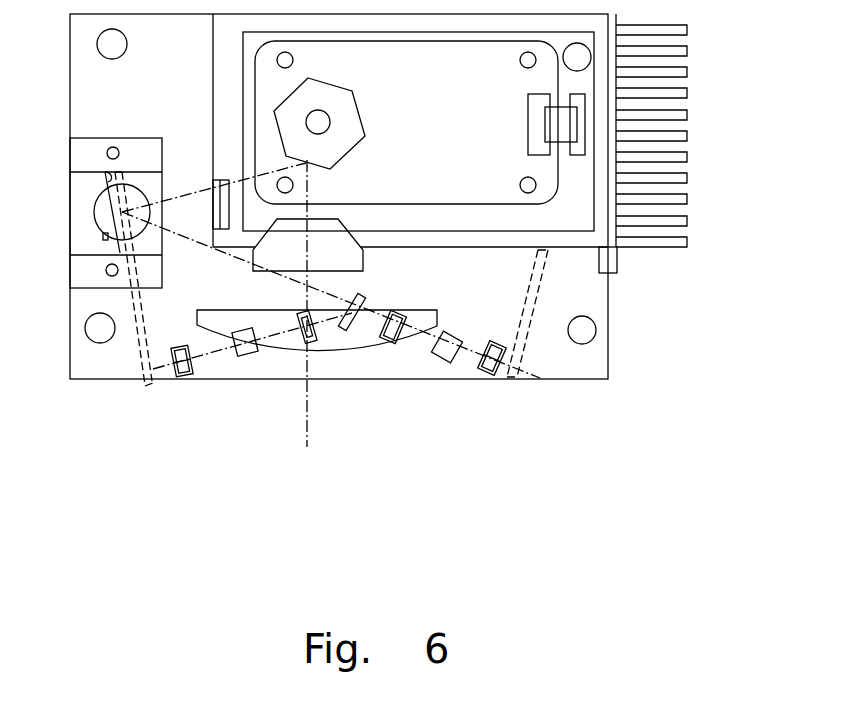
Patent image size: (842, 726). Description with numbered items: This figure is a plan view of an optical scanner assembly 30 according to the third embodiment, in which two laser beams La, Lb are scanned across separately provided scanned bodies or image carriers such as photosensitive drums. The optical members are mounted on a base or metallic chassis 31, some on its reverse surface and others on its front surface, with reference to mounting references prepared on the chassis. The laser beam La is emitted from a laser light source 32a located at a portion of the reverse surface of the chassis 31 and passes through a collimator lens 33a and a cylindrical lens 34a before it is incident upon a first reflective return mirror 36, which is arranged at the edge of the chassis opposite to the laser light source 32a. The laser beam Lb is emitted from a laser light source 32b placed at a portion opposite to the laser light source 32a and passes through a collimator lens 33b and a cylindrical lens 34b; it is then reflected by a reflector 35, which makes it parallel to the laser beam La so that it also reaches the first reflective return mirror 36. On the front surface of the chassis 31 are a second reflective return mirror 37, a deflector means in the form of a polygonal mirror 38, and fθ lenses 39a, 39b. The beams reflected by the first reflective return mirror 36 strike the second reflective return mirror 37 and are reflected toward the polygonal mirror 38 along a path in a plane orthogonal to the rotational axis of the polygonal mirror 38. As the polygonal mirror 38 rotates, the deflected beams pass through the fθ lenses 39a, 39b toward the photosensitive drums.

The optical scanner assembly 30 is at (152, 432).
The chassis 31 is at (592, 303).
The laser light source 32a is at (483, 378).
The laser light source 32b is at (185, 376).
The collimator lens 33a is at (440, 365).
The collimator lens 33b is at (243, 356).
The cylindrical lens 34a is at (384, 343).
The cylindrical lens 34b is at (312, 345).
The reflector 35 is at (358, 294).
The first reflective return mirror 36 is at (123, 172).
The second reflective return mirror 37 is at (111, 181).
The polygonal mirror 38 is at (343, 110).
The fθ lens 39a is at (340, 243).
The fθ lens 39b is at (203, 322).
The laser beam La is at (463, 380).
The laser beam Lb is at (283, 340).